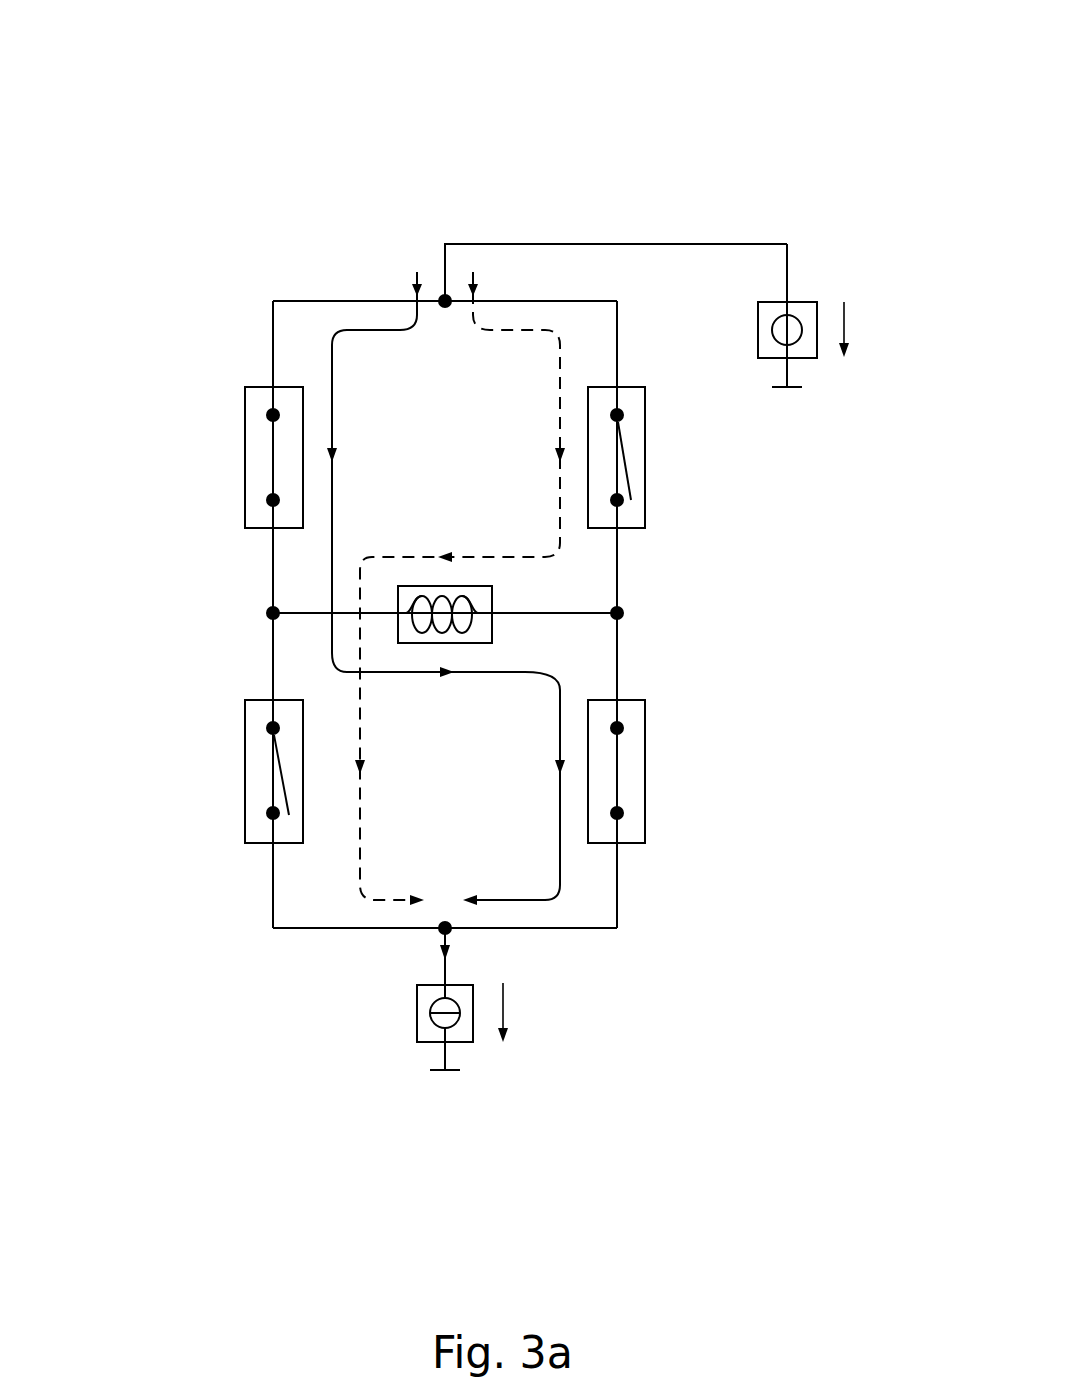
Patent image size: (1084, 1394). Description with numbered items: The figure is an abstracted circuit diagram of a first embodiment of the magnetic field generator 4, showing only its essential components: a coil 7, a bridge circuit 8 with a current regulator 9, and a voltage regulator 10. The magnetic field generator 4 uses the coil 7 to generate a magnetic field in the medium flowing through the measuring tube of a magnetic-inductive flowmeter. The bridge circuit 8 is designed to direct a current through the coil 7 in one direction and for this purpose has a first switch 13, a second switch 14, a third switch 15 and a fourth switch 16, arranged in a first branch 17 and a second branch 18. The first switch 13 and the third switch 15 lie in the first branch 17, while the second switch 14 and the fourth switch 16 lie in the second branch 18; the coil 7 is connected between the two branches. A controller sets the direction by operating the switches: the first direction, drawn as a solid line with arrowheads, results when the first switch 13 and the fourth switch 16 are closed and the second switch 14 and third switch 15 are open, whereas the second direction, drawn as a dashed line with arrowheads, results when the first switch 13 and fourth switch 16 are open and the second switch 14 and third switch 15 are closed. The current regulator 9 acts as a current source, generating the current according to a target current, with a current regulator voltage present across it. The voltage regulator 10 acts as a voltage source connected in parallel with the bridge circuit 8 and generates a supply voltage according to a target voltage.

The magnetic field generator 4 is at (727, 82).
The coil 7 is at (493, 597).
The bridge circuit 8 is at (223, 255).
The current regulator 9 is at (417, 993).
The voltage regulator 10 is at (803, 298).
The first switch 13 is at (245, 403).
The second switch 14 is at (645, 460).
The third switch 15 is at (245, 717).
The fourth switch 16 is at (645, 717).
The first branch 17 is at (248, 977).
The second branch 18 is at (645, 977).